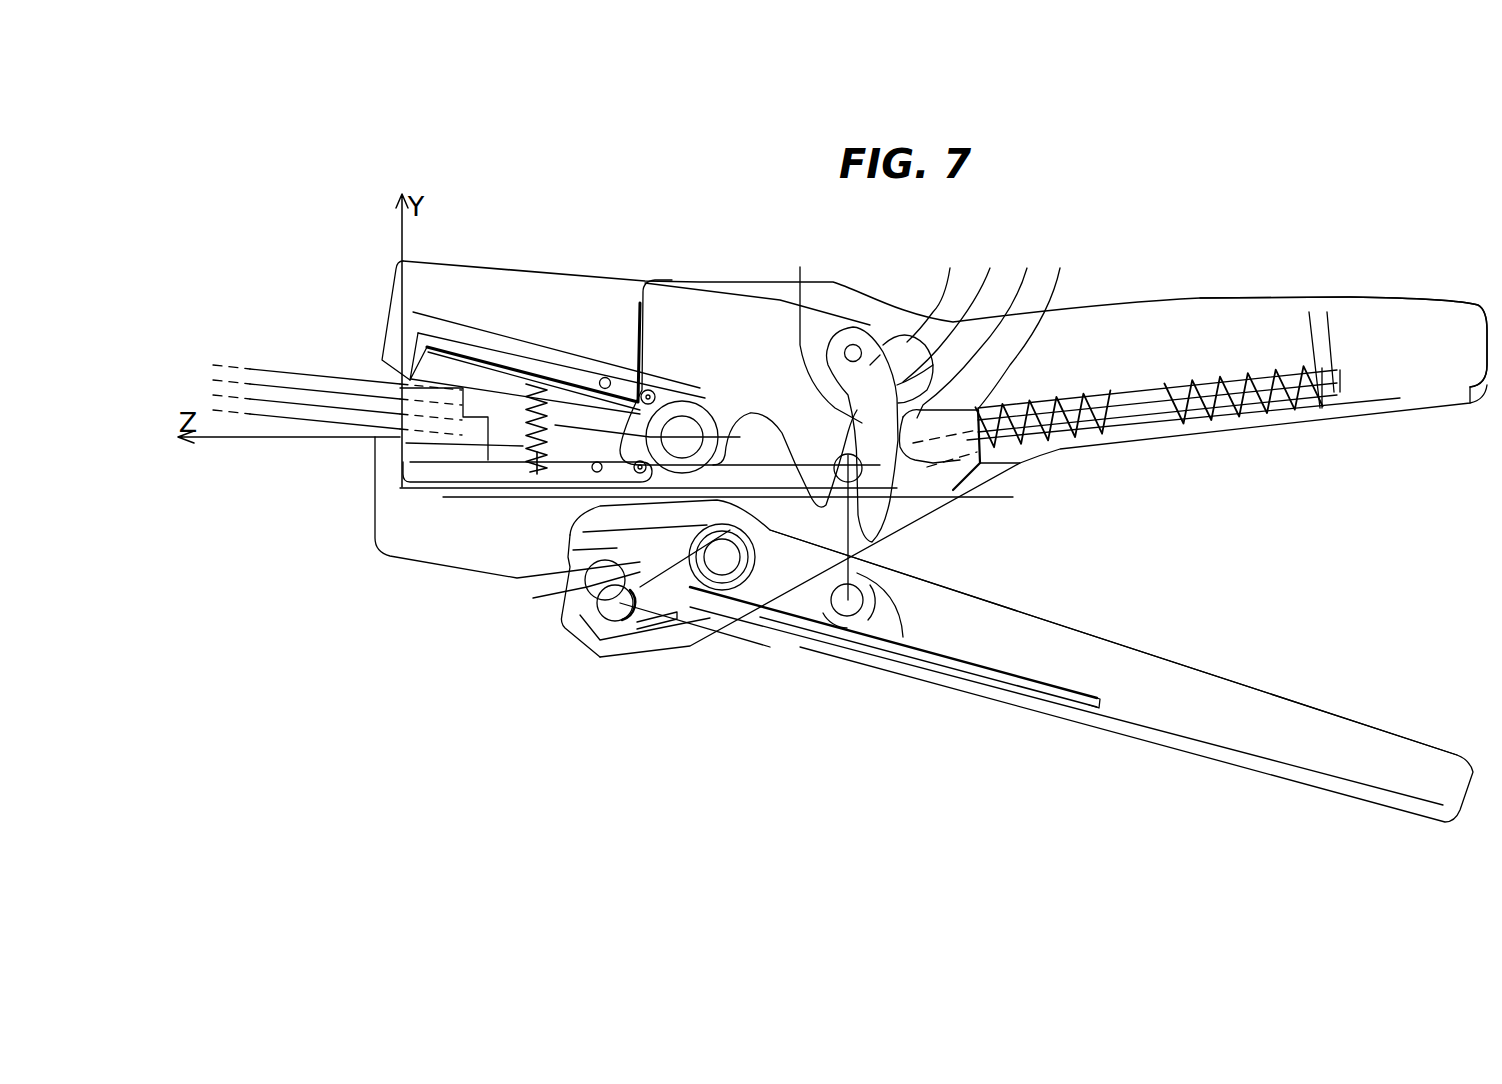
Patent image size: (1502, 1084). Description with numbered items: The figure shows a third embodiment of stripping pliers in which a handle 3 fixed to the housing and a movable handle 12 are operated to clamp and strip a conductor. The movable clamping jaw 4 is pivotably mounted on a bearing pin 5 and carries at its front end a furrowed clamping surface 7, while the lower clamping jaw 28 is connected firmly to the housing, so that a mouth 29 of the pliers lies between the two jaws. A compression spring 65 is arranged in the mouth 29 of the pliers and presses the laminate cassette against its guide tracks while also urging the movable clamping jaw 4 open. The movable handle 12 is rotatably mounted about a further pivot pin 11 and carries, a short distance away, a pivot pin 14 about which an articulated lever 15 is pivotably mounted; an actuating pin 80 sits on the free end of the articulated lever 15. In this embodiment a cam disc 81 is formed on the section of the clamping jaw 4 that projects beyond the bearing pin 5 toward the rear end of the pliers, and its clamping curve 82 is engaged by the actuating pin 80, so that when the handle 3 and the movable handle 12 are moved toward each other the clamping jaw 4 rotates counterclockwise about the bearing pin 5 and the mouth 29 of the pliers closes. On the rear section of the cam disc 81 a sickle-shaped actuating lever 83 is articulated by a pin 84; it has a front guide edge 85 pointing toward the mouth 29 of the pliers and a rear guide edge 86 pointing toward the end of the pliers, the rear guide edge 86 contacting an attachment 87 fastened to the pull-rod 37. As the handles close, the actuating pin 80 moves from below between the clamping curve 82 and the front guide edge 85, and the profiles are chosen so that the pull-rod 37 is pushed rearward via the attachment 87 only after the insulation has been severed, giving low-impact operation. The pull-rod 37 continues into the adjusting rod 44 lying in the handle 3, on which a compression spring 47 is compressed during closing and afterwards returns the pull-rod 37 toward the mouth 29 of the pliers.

The handle 3 is at (1412, 332).
The movable clamping jaw 4 is at (470, 283).
The bearing pin 5 is at (678, 412).
The clamping surface 7 is at (1087, 705).
The further pivot pin 11 is at (722, 562).
The movable handle 12 is at (1433, 760).
The pivot pin 14 is at (847, 618).
The articulated lever 15 is at (903, 637).
The lower clamping jaw 28 is at (430, 545).
The mouth of the pliers 29 is at (372, 355).
The pull-rod 37 is at (1000, 448).
The adjusting rod 44 is at (1240, 378).
The compression spring 47 is at (1272, 368).
The compression spring 65 is at (528, 385).
The actuating pin 80 is at (840, 472).
The cam disc 81 is at (937, 290).
The clamping curve 82 is at (821, 331).
The actuating lever 83 is at (870, 363).
The pin 84 is at (856, 345).
The front guide edge 85 is at (857, 413).
The rear guide edge 86 is at (953, 310).
The attachment 87 is at (970, 353).